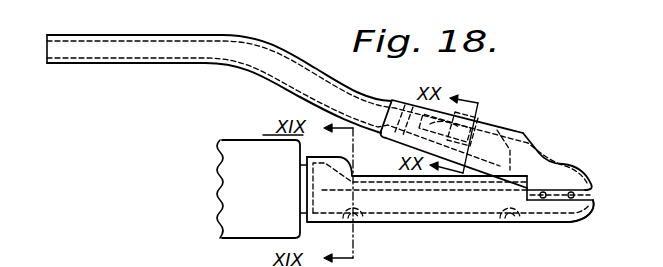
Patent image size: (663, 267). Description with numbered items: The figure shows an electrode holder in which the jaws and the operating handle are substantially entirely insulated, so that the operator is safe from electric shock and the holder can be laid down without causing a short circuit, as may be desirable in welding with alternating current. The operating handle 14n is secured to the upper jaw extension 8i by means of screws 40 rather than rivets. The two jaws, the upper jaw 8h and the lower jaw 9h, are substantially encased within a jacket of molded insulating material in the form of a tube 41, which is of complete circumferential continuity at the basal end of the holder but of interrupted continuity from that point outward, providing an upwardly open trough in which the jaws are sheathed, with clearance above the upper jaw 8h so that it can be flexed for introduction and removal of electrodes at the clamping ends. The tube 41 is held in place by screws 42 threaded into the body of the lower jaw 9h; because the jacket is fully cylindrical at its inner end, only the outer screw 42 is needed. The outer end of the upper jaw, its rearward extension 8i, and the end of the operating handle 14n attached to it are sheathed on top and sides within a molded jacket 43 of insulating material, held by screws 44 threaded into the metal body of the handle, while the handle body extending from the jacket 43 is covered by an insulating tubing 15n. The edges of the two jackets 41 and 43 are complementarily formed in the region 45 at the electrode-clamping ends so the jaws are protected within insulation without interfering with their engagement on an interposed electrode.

The operating handle 14n is at (254, 29).
The insulating tubing 15n is at (297, 53).
The screws 44 is at (407, 108).
The screws 40 is at (465, 108).
The upper jaw extension 8i is at (543, 150).
The molded jacket of insulating material 43 is at (565, 168).
The upper jaw 8h is at (367, 179).
The lower jaw 9h is at (420, 222).
The tube of insulating material 41 is at (462, 222).
The screws 42 is at (364, 204).
The region 45 is at (566, 200).